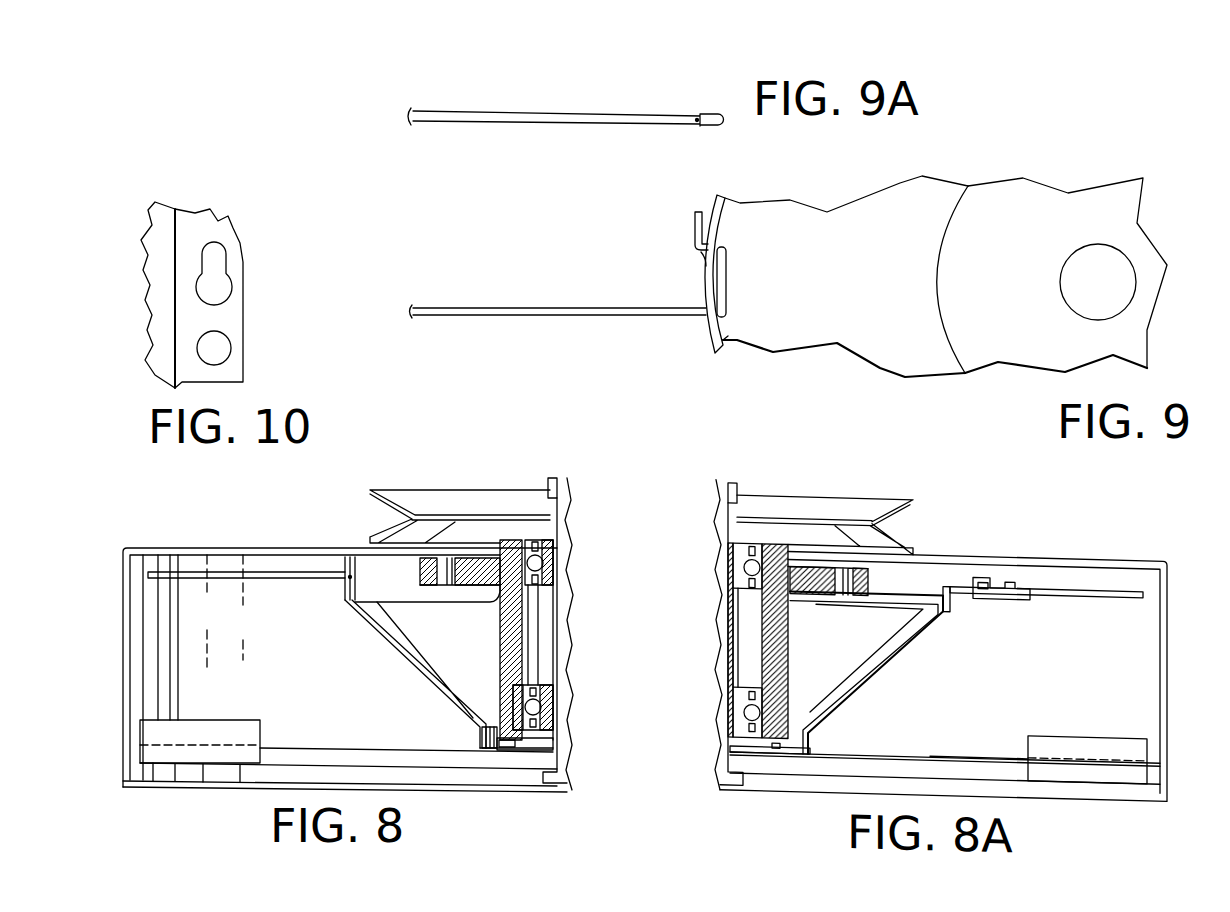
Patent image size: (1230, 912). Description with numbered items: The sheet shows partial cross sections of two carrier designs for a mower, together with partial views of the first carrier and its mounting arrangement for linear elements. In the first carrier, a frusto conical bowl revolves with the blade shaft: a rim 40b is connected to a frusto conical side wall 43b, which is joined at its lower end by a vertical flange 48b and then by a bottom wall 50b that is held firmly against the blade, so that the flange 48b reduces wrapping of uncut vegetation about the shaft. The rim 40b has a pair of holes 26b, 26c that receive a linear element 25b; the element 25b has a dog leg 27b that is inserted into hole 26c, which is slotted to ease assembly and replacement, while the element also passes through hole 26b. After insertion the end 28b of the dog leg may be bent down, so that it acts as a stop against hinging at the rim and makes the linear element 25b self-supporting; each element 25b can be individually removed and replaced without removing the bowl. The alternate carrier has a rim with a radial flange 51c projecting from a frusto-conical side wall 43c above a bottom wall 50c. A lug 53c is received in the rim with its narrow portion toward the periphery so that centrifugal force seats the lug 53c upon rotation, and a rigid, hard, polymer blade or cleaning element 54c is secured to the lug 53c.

In FIG. 9A, the linear element 25b is at (517, 112).
In FIG. 9, the linear element 25b is at (470, 306).
In FIG. 8, the linear element 25b is at (229, 580).
In FIG. 9, the hole 26b is at (699, 320).
In FIG. 10, the hole 26b is at (232, 345).
In FIG. 9, the slotted hole 26c is at (718, 240).
In FIG. 10, the slotted hole 26c is at (227, 262).
In FIG. 9, the dog leg 27b is at (695, 248).
In FIG. 9, the end of the dog leg 28b is at (693, 232).
In FIG. 9, the rim 40b is at (728, 343).
In FIG. 8, the rim 40b is at (343, 592).
In FIG. 9, the frusto conical side wall 43b is at (837, 281).
In FIG. 8, the frusto conical side wall 43b is at (418, 660).
In FIG. 8, the vertical flange 48b is at (481, 738).
In FIG. 9, the bottom wall 50b is at (1030, 271).
In FIG. 8, the bottom wall 50b is at (532, 746).
In FIG. 8A, the frusto-conical side wall 43c is at (876, 668).
In FIG. 8A, the base plate 50c is at (795, 753).
In FIG. 8A, the radial flange 51c is at (949, 604).
In FIG. 8A, the lug 53c is at (990, 569).
In FIG. 8A, the cleaning element 54c is at (1085, 579).